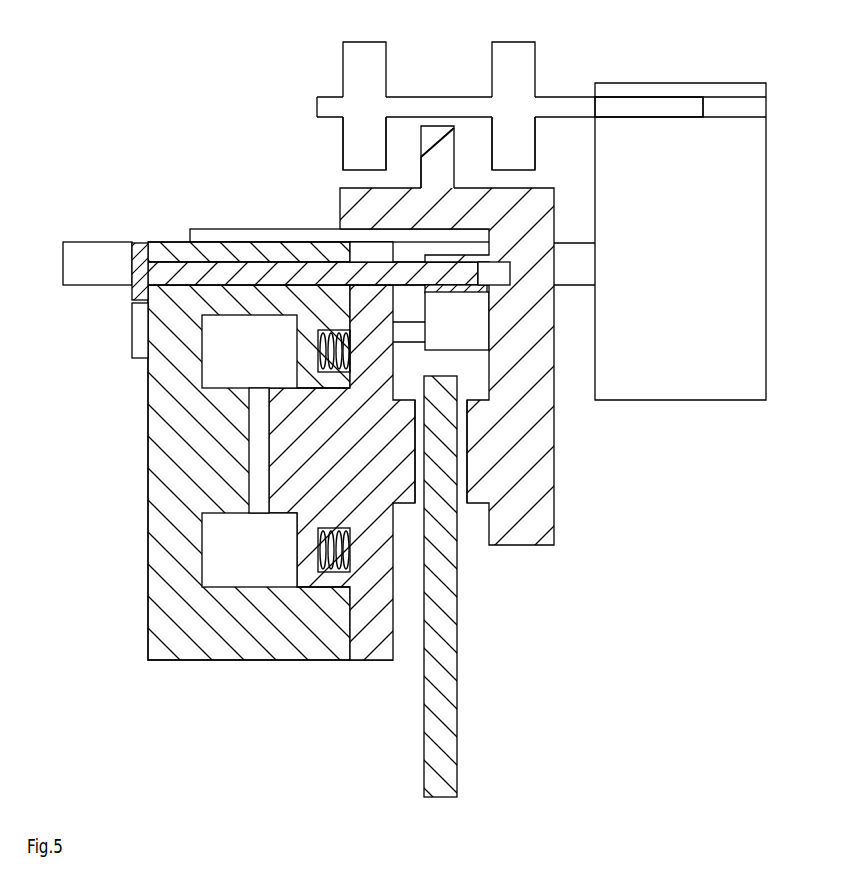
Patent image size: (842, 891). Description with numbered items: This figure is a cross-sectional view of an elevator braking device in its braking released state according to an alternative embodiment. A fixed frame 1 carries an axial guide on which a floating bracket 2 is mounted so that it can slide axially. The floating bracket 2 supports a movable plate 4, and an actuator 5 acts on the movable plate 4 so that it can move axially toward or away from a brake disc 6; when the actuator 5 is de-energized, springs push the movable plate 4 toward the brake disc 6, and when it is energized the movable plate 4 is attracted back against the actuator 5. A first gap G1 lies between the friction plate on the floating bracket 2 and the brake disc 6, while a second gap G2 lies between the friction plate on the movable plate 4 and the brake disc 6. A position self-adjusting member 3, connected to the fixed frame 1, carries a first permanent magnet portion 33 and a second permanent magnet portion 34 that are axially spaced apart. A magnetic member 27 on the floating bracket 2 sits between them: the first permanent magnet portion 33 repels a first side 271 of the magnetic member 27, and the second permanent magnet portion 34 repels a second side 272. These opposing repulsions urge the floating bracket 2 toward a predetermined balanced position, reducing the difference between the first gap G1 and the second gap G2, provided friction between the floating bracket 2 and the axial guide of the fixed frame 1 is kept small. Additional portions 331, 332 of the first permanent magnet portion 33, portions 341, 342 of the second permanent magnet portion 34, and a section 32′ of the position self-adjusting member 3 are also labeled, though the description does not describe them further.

The fixed frame 1 is at (718, 199).
The floating bracket 2 is at (515, 417).
The position self-adjusting member 3 is at (335, 100).
The second permanent magnet portion 34 is at (360, 62).
The first nut inner side face 341 is at (385, 147).
The first nut outer side face 342 is at (342, 135).
The first permanent magnet portion 33 is at (513, 70).
The second nut outer side face 331 is at (535, 133).
The second nut inner side face 332 is at (490, 135).
The rod section 32′ is at (632, 107).
The magnetic member 27 is at (427, 132).
The first side of the magnetic member 271 is at (453, 130).
The second side of the magnetic member 272 is at (422, 160).
The movable plate 4 is at (368, 598).
The actuator 5 is at (252, 623).
The brake disc 6 is at (448, 603).
The first gap G1 is at (422, 482).
The second gap G2 is at (463, 482).